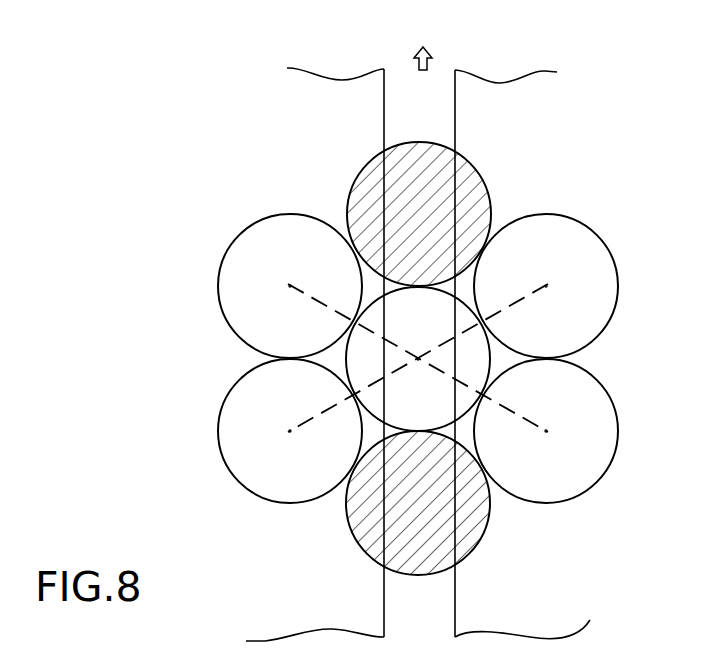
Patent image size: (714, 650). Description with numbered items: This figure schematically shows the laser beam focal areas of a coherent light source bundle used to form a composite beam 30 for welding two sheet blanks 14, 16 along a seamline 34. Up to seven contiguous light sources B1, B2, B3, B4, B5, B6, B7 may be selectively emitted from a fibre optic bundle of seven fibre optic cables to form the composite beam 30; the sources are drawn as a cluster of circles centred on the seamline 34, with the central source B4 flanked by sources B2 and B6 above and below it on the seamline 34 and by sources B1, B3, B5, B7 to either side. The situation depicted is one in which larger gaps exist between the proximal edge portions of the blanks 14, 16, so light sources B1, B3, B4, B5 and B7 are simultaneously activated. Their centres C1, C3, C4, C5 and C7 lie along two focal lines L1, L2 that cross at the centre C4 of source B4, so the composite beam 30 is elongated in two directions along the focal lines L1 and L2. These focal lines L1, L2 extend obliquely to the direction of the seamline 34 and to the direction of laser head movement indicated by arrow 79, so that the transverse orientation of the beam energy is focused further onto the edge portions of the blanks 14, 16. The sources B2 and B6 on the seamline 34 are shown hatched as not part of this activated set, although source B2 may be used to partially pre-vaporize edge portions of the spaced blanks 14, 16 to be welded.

The arrow 79 is at (425, 39).
The seamline 34 is at (445, 118).
The sheet blank 14 is at (598, 174).
The sheet blank 16 is at (148, 396).
The composite beam 30 is at (633, 332).
The light source B1 is at (301, 269).
The light source B2 is at (442, 199).
The light source B3 is at (577, 277).
The light source B4 is at (437, 333).
The light source B5 is at (301, 408).
The light source B6 is at (438, 490).
The light source B7 is at (576, 420).
The center of bump B1 C1 is at (276, 302).
The center of bump B3 C3 is at (565, 305).
The center of bump B4 C4 is at (416, 389).
The center of bump B5 C5 is at (285, 447).
The center of bump B7 C7 is at (554, 453).
The focal line L1 is at (525, 422).
The focal line L2 is at (336, 410).